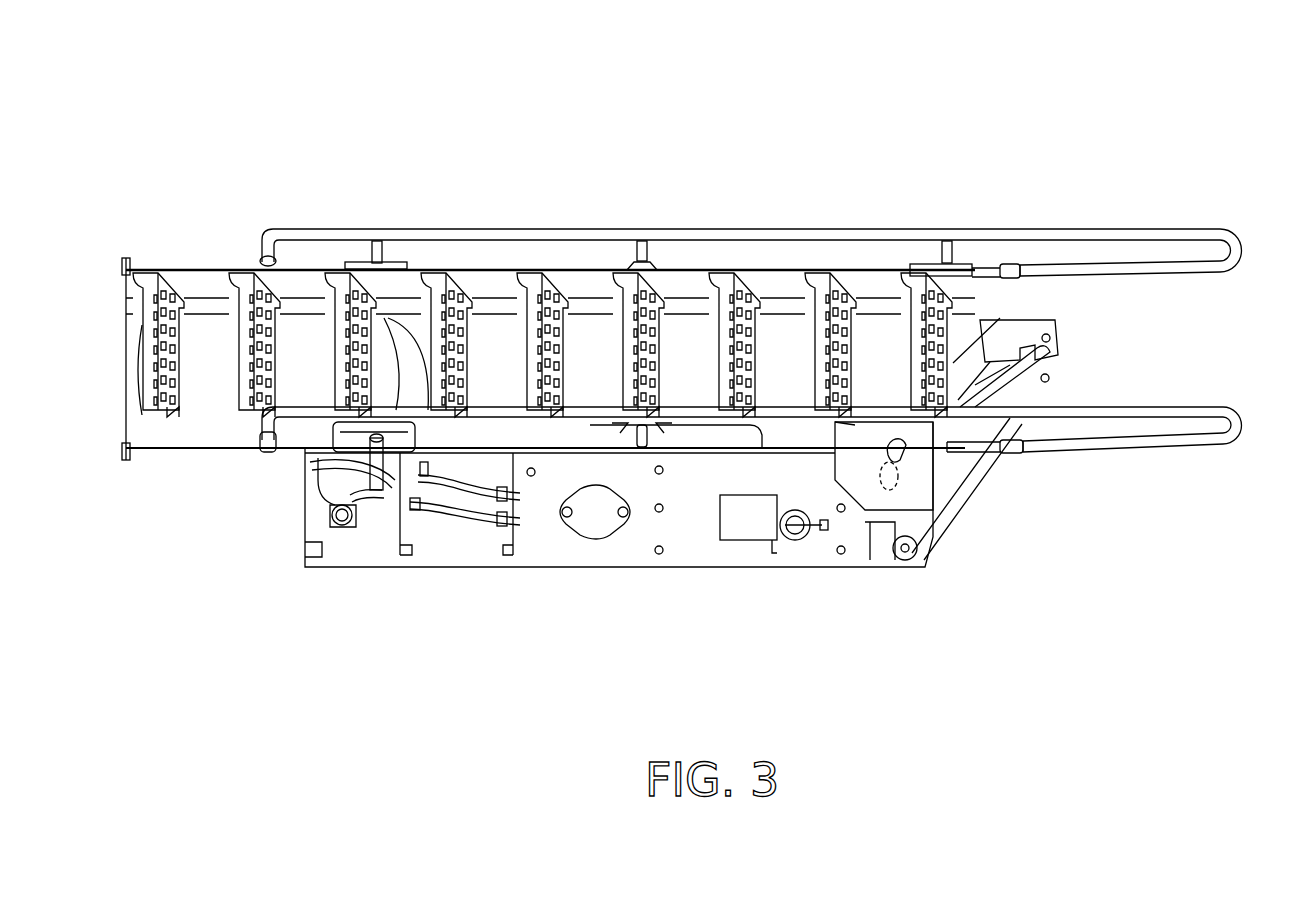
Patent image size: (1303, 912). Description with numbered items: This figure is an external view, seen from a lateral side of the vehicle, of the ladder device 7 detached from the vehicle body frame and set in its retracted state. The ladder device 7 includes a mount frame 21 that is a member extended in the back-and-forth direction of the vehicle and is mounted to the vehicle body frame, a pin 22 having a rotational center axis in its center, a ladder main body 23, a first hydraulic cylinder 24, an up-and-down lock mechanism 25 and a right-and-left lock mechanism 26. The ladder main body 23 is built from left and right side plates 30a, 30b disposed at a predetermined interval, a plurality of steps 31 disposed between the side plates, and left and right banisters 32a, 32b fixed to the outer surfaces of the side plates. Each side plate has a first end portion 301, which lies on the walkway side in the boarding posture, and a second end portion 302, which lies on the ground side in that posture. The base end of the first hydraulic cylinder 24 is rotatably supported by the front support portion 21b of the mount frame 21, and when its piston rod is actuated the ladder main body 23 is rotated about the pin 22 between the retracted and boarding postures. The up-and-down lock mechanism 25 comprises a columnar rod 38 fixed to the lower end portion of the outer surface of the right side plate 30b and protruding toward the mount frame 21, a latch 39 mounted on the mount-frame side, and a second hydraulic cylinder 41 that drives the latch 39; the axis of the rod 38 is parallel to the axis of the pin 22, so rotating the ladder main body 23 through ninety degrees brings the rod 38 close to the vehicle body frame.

The ladder device 7 is at (752, 125).
The mount frame 21 is at (563, 568).
The front support portion 21b is at (1040, 316).
The pin 22 is at (933, 483).
The ladder main body 23 is at (152, 266).
The first hydraulic cylinder 24 is at (1048, 376).
The up-and-down lock mechanism 25 is at (306, 482).
The right-and-left lock mechanism 26 is at (375, 244).
The left side plate 30a is at (586, 285).
The right side plate 30b is at (695, 433).
The steps 31 is at (842, 296).
The left banister 32a is at (1208, 230).
The right banister 32b is at (1217, 407).
The rod 38 is at (350, 458).
The latch 39 is at (363, 526).
The second hydraulic cylinder 41 is at (445, 465).
The first end portion 301 is at (798, 433).
The second end portion 302 is at (166, 433).